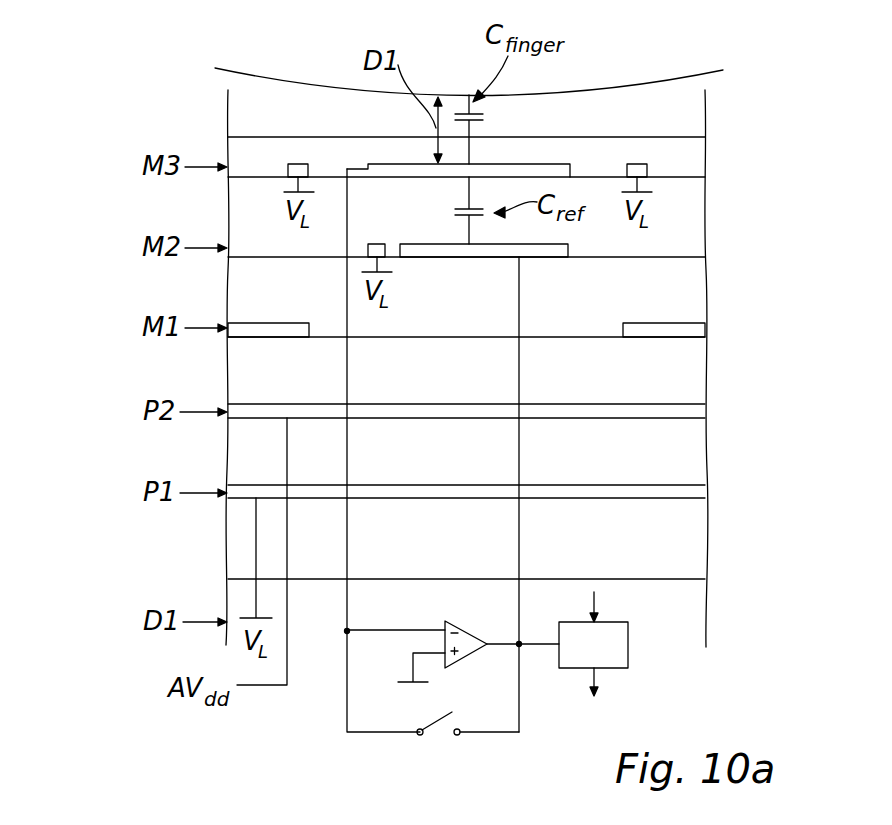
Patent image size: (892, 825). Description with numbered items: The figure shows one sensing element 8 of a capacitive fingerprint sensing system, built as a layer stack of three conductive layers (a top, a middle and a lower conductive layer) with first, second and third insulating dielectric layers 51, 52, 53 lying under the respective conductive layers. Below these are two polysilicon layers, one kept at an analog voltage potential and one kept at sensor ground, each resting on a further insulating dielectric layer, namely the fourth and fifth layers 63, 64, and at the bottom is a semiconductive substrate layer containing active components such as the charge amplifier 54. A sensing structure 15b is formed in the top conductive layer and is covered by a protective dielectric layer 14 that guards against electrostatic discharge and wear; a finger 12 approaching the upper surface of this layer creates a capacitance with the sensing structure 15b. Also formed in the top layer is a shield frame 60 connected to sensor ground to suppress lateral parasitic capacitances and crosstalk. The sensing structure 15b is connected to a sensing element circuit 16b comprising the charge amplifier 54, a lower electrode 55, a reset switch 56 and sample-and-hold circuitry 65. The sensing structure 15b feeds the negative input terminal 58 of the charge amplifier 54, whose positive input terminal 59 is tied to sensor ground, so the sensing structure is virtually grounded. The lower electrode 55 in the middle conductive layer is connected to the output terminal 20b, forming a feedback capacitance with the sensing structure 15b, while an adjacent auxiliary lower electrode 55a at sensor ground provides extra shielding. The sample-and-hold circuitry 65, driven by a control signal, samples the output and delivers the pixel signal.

The sensing element 8 is at (130, 64).
The finger 12 is at (461, 27).
The protective dielectric layer 14 is at (693, 156).
The sensing structure 15b is at (560, 164).
The sensing element circuit 16b is at (312, 717).
The output terminal 20b is at (497, 646).
The first layer of insulating dielectric material 51 is at (688, 222).
The second layer of insulating dielectric material 52 is at (688, 311).
The third layer of insulating dielectric material 53 is at (682, 390).
The charge amplifier 54 is at (465, 632).
The lower electrode 55 is at (528, 244).
The auxiliary lower electrode 55a is at (368, 250).
The reset switch 56 is at (430, 740).
The negative input terminal 58 is at (407, 630).
The positive input terminal 59 is at (427, 650).
The shield frame 60 is at (294, 164).
The fourth layer of insulating dielectric material 63 is at (680, 470).
The fifth layer of insulating dielectric material 64 is at (690, 555).
The sample-and-hold circuitry 65 is at (628, 630).